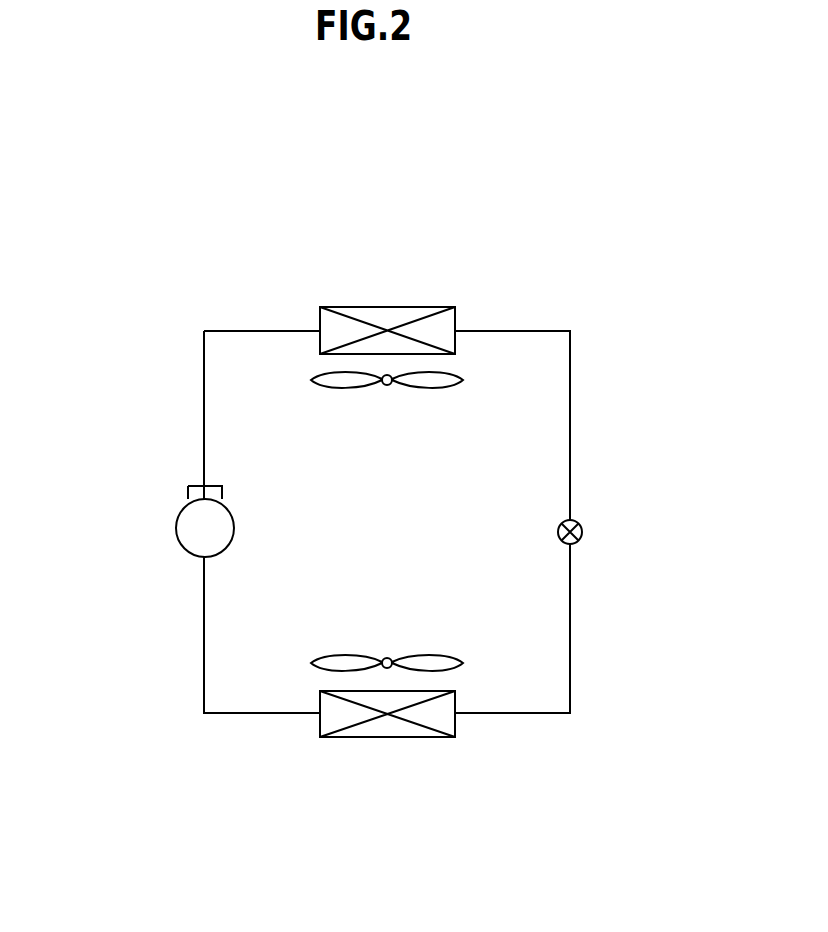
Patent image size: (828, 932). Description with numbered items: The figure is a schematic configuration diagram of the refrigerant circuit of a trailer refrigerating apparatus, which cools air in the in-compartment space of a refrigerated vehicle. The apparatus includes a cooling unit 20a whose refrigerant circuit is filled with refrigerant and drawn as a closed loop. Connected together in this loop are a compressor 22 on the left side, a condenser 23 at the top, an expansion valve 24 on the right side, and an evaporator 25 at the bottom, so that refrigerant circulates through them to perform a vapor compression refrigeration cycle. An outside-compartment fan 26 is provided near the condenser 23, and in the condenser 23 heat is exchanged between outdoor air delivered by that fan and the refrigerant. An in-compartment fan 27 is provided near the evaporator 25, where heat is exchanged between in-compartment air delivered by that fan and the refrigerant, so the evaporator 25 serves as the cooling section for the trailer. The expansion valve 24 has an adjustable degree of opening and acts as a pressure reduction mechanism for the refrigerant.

The cooling unit 20a is at (511, 246).
The compressor 22 is at (177, 528).
The condenser 23 is at (377, 306).
The expansion valve 24 is at (584, 528).
The evaporator 25 is at (378, 740).
The outside-compartment fan 26 is at (432, 389).
The in-compartment fan 27 is at (433, 656).